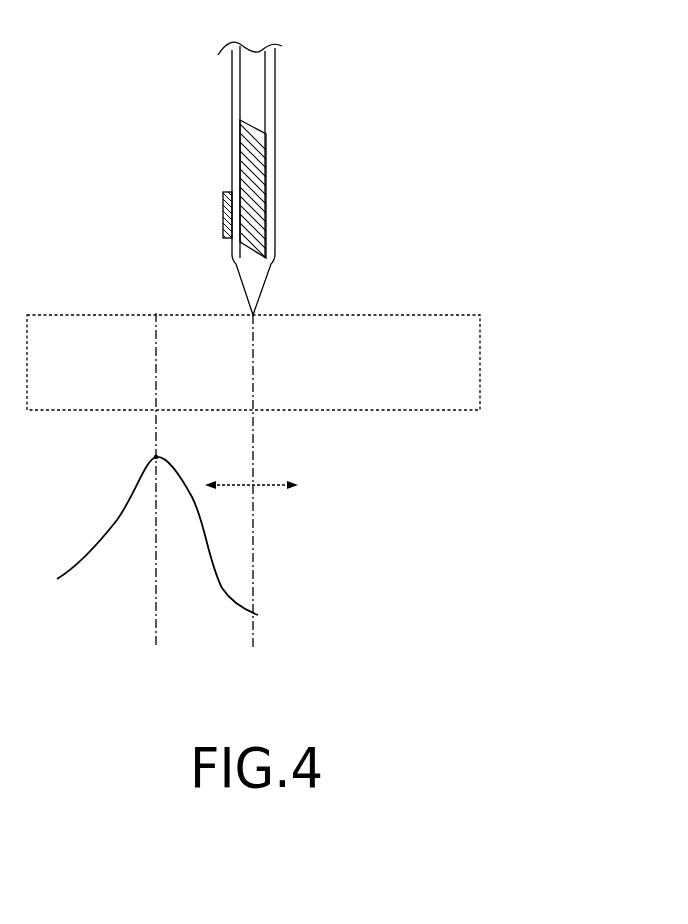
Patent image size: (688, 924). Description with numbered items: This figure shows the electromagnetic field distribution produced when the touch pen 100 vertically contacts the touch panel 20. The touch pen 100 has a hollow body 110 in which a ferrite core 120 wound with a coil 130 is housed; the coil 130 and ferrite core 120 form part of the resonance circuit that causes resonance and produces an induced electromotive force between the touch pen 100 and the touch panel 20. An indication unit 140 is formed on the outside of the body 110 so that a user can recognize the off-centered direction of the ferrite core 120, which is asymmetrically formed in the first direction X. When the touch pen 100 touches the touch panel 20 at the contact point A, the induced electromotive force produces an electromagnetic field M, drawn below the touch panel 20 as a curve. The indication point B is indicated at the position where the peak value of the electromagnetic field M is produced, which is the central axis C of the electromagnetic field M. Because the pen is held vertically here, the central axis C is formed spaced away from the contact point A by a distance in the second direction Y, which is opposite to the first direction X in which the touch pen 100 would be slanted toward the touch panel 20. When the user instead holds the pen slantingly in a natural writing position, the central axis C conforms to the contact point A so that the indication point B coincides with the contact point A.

The touch pen 100 is at (180, 108).
The body 110 is at (275, 90).
The ferrite core 120 is at (258, 118).
The coil 130 is at (255, 196).
The indication unit 140 is at (223, 210).
The touch panel 20 is at (464, 362).
The contact point A is at (258, 313).
The indication point B is at (156, 313).
The central axis of electromagnetic field C is at (156, 457).
The electromagnetic field M is at (110, 527).
The first direction X is at (306, 485).
The second direction Y is at (239, 485).